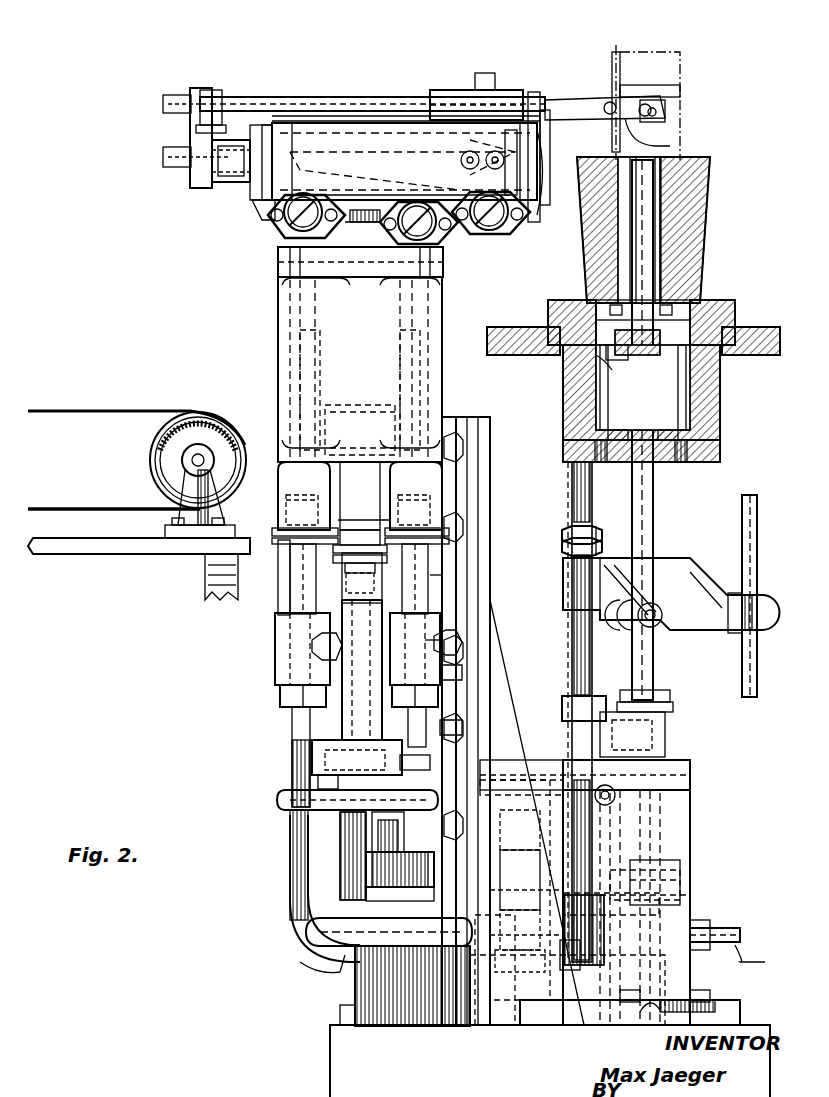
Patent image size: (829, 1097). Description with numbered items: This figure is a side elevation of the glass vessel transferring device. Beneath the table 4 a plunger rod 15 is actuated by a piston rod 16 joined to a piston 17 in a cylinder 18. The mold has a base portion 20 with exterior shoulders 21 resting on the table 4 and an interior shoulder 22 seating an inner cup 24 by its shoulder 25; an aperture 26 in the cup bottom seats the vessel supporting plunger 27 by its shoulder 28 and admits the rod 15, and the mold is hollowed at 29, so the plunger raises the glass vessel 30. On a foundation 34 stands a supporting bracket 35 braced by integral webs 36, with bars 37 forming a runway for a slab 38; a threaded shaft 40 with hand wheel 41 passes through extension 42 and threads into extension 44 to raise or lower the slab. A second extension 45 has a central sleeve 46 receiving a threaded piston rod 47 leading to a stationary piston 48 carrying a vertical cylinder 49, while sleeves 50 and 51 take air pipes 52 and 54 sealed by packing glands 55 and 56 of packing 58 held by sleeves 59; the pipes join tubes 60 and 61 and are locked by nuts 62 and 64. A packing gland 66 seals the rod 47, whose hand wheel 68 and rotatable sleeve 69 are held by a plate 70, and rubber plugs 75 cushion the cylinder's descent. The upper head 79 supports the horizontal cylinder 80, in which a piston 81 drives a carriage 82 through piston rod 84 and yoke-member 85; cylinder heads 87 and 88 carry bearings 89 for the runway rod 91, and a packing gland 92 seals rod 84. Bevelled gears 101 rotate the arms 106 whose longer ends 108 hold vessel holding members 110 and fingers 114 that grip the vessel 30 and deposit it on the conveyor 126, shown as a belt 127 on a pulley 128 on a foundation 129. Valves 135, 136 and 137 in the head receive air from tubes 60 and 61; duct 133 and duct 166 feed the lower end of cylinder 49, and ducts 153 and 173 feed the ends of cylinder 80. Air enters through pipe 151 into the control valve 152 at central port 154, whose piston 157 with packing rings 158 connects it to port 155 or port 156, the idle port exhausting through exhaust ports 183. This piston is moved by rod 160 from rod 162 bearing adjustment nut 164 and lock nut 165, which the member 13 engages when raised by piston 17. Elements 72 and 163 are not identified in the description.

The table 4 is at (500, 334).
The member 13 is at (717, 620).
The plunger rod 15 is at (656, 498).
The piston rod 16 is at (692, 812).
The piston 17 is at (692, 872).
The cylinder 18 is at (690, 922).
The base portion 20 is at (708, 402).
The shoulders 21 is at (738, 328).
The shoulder 22 is at (722, 368).
The inner cup 24 is at (686, 412).
The shoulder 25 is at (562, 322).
The aperture 26 is at (665, 440).
The vessel supporting plunger 27 is at (662, 212).
The shoulder 28 is at (605, 355).
The hollowed upper part of the mold 29 is at (672, 160).
The glass vessel 30 is at (682, 62).
The foundation 34 is at (330, 1058).
The supporting bracket 35 is at (484, 433).
The integral webs 36 is at (572, 680).
The bars 37 is at (452, 418).
The slab 38 is at (560, 760).
The threaded shaft 40 is at (400, 858).
The hand wheel 41 is at (340, 955).
The extension 42 is at (420, 878).
The extension 44 is at (350, 858).
The second extension 45 is at (440, 650).
The central sleeve 46 is at (335, 752).
The threaded piston rod 47 is at (340, 838).
The stationary piston 48 is at (345, 430).
The vertical cylinder 49 is at (278, 362).
The sleeve 50 is at (275, 655).
The sleeve 51 is at (490, 600).
The air pipe 52 is at (283, 596).
The air pipe 54 is at (440, 577).
The packing gland 55 is at (283, 520).
The packing gland 56 is at (452, 515).
The packing 58 is at (284, 498).
The sleeves 59 is at (290, 548).
The tube 60 is at (292, 747).
The tube 61 is at (463, 728).
The nut 62 is at (278, 703).
The nut 64 is at (463, 672).
The packing gland 66 is at (380, 530).
The hand wheel 68 is at (292, 823).
The rotatable sleeve 69 is at (300, 796).
The plate 70 is at (430, 760).
The nut 72 is at (315, 645).
The rubber plugs 75 is at (350, 565).
The upper head 79 is at (278, 262).
The horizontal cylinder 80 is at (350, 130).
The piston 81 is at (520, 125).
The carriage 82 is at (445, 90).
The piston rod 84 is at (300, 122).
The yoke-member 85 is at (170, 125).
The cylinder head 87 is at (262, 215).
The cylinder head 88 is at (535, 210).
The bearings 89 is at (208, 88).
The rod 91 is at (275, 98).
The packing gland 92 is at (218, 184).
The bevelled gears 101 is at (540, 780).
The arms 106 is at (588, 100).
The longer ends 108 is at (660, 128).
The vessel holding members 110 is at (660, 112).
The fingers 114 is at (622, 68).
The conveyor 126 is at (164, 400).
The belt 127 is at (70, 410).
The pulley 128 is at (152, 470).
The foundation 129 is at (142, 555).
The duct 133 is at (430, 308).
The valve 135 is at (285, 228).
The valve 136 is at (448, 242).
The valve 137 is at (495, 232).
The pipe 151 is at (760, 960).
The control valve 152 is at (590, 1025).
The duct 153 is at (262, 190).
The central port 154 is at (636, 960).
The port 155 is at (612, 985).
The port 156 is at (608, 915).
The piston 157 is at (462, 1000).
The packing rings 158 is at (512, 1025).
The rod 160 is at (528, 848).
The rod 162 is at (563, 711).
The passage 163 is at (360, 368).
The adjustment nut 164 is at (565, 540).
The lock nut 165 is at (604, 528).
The duct 166 is at (365, 470).
The duct 173 is at (518, 200).
The exhaust ports 183 is at (600, 850).